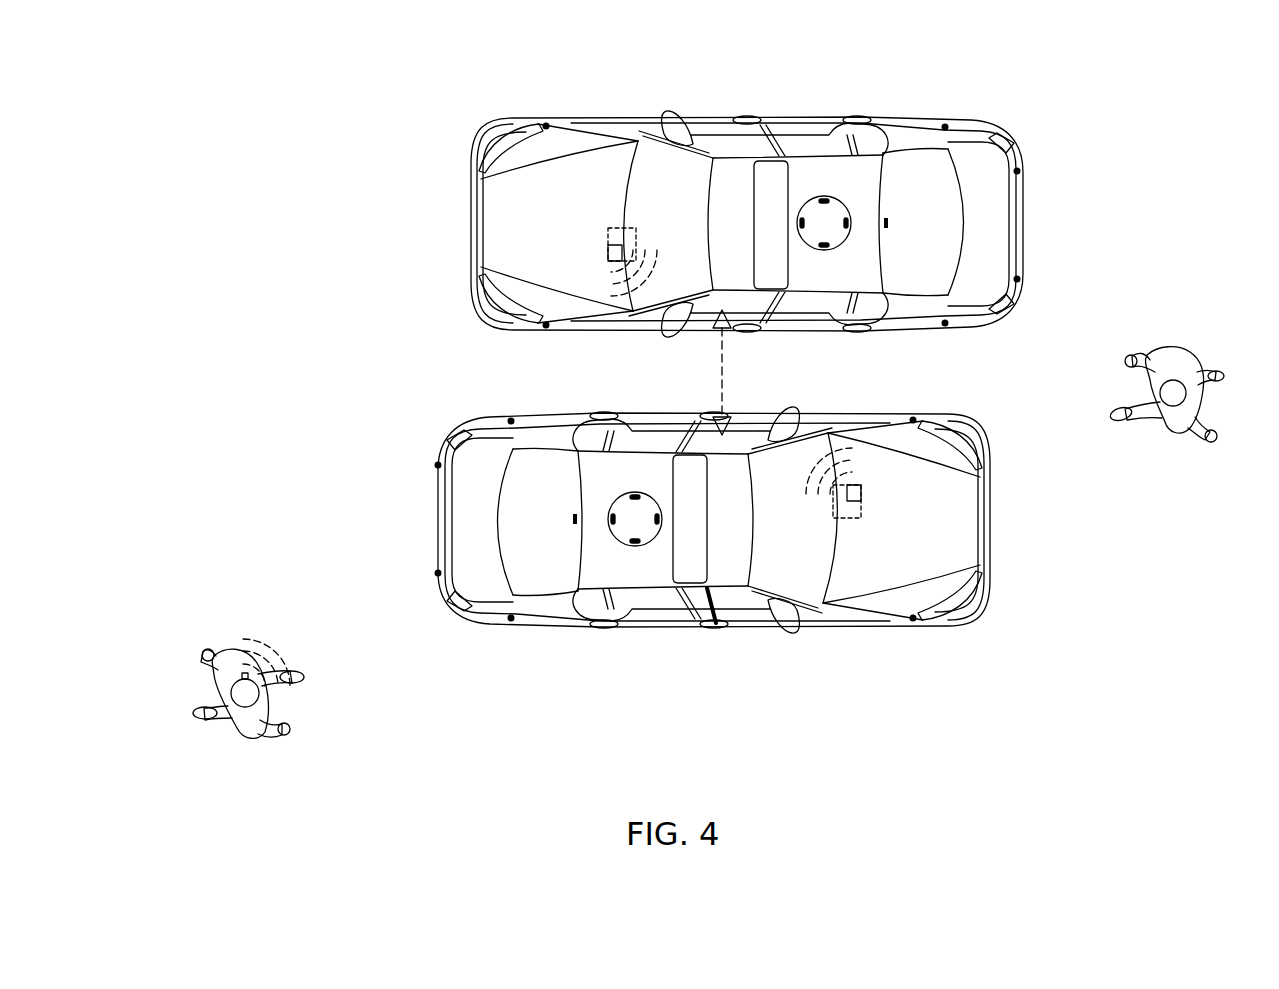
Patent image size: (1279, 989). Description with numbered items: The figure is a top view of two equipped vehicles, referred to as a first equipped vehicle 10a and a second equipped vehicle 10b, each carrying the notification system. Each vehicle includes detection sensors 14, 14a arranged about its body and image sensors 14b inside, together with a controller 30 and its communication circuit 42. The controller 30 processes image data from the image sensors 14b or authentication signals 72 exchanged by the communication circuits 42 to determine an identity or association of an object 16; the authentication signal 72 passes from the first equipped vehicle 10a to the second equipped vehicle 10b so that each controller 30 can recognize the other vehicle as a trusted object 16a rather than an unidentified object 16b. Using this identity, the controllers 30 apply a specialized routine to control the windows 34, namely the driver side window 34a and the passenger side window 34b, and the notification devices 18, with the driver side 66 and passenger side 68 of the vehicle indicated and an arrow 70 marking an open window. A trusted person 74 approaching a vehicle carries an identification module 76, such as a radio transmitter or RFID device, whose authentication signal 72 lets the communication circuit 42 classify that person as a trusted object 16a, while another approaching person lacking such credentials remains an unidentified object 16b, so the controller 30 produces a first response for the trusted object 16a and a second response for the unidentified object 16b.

The first equipped vehicle 10a is at (752, 530).
The second equipped vehicle 10b is at (752, 234).
The detection sensors 14 is at (546, 126).
The exterior sensor 14a is at (727, 404).
The image sensors 14b is at (650, 507).
The object 16 is at (674, 427).
The trusted object 16a is at (616, 427).
The unidentified object 16b is at (1180, 368).
The notification device 18 is at (780, 168).
The controller 30 is at (610, 236).
The windows 34 is at (775, 368).
The driver side window 34a is at (735, 440).
The passenger side window 34b is at (725, 132).
The communication circuit 42 is at (607, 252).
The driver side 66 is at (938, 342).
The passenger side 68 is at (791, 88).
The arrow 70 is at (721, 380).
The authentication signal 72 is at (608, 297).
The trusted person 74 is at (226, 746).
The identification module 76 is at (243, 673).